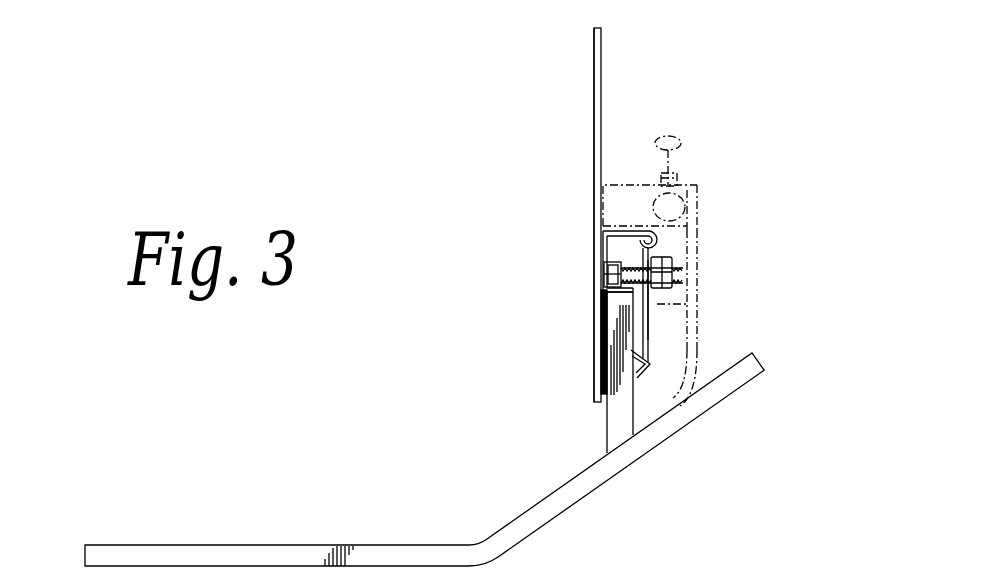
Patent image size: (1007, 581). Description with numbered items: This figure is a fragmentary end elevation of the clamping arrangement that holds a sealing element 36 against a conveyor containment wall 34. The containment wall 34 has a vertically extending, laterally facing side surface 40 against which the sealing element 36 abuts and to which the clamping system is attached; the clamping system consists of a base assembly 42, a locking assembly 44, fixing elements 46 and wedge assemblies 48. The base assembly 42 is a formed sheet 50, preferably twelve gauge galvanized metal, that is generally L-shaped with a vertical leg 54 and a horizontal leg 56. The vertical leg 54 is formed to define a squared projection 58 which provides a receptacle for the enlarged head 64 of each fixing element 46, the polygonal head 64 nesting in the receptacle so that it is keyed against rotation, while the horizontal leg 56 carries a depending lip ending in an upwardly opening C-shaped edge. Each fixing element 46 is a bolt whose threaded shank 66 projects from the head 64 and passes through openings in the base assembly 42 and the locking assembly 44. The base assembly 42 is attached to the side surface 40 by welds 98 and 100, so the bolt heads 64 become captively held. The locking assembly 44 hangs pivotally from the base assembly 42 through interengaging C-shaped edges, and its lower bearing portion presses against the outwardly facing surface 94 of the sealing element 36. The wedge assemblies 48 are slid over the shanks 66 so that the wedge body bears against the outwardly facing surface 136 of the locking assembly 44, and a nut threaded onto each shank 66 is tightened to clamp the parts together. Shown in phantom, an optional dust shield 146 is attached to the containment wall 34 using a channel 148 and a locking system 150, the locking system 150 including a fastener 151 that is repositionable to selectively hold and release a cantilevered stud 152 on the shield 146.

The containment wall 34 is at (600, 58).
The sealing element 36 is at (620, 425).
The side surface 40 is at (601, 90).
The base assembly 42 is at (613, 318).
The locking assembly 44 is at (650, 329).
The fixing element 46 is at (604, 278).
The wedge assembly 48 is at (697, 298).
The formed sheet 50 is at (612, 303).
The vertical leg 54 is at (603, 357).
The horizontal leg 56 is at (630, 231).
The squared projection 58 is at (622, 252).
The enlarged head 64 is at (605, 268).
The threaded shank 66 is at (685, 271).
The outwardly facing surface 94 is at (605, 396).
The weld 98 is at (633, 390).
The weld 100 is at (633, 239).
The outwardly facing surface 136 is at (649, 313).
The dust shield 146 is at (703, 377).
The channel 148 is at (626, 185).
The locking system 150 is at (690, 175).
The fastener 151 is at (672, 178).
The cantilevered stud 152 is at (654, 186).